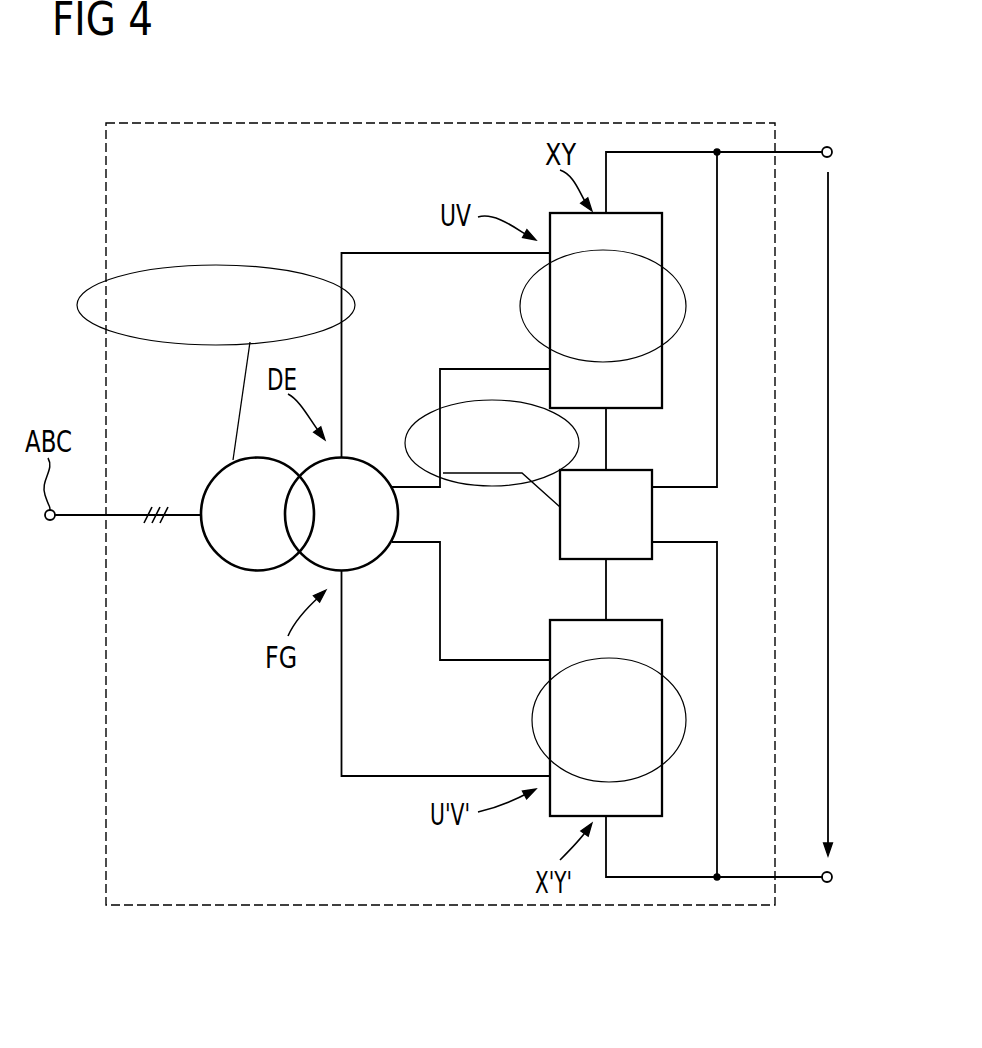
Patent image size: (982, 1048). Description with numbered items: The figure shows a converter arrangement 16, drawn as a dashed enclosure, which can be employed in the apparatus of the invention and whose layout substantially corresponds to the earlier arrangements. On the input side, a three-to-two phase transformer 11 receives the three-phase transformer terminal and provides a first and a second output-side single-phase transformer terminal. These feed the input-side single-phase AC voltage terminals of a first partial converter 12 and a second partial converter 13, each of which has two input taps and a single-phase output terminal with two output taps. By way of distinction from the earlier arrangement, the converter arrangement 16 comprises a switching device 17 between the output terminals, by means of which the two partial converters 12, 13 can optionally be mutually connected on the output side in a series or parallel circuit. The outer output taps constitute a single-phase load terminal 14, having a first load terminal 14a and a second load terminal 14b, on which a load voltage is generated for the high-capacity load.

The three-to-two phase transformer 11 is at (229, 561).
The first partial converter 12 is at (550, 321).
The second partial converter 13 is at (550, 720).
The single-phase load terminal 14 is at (752, 491).
The first load terminal 14a is at (832, 148).
The second load terminal 14b is at (830, 882).
The converter arrangement 16 is at (530, 196).
The switching device 17 is at (560, 512).